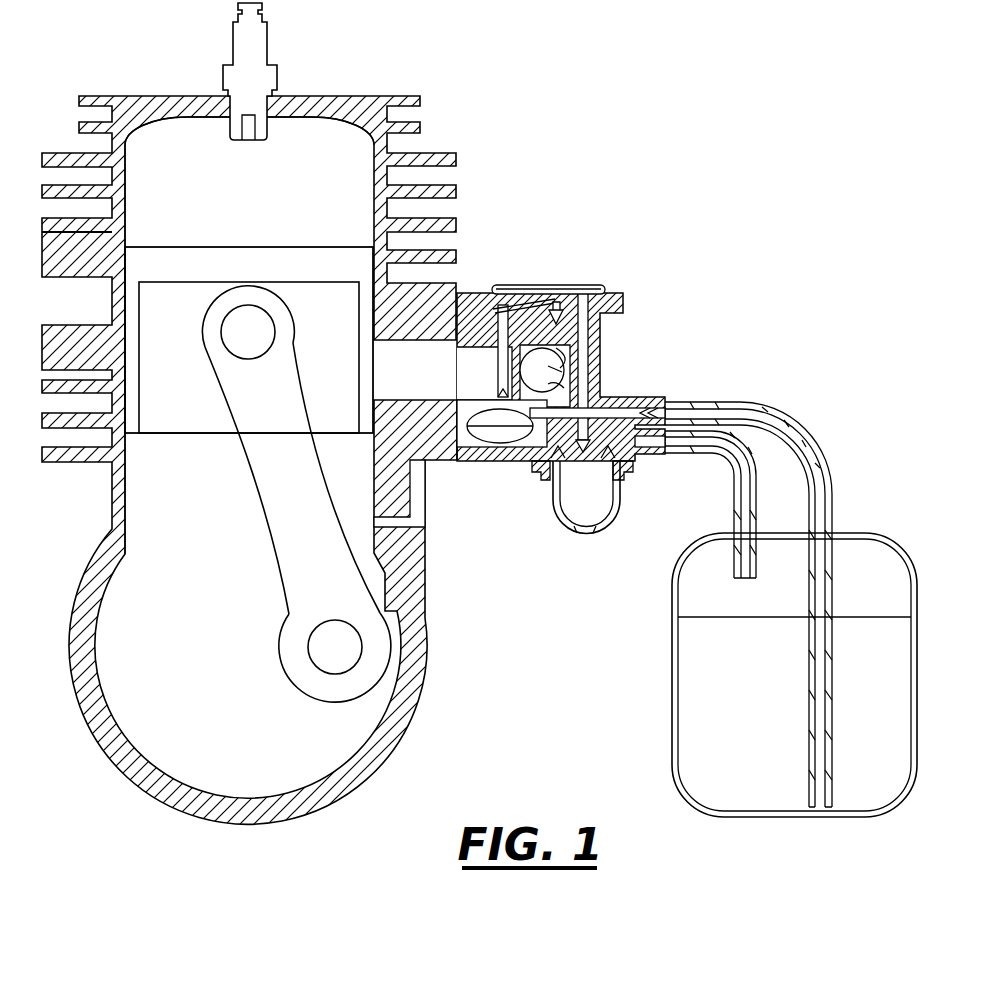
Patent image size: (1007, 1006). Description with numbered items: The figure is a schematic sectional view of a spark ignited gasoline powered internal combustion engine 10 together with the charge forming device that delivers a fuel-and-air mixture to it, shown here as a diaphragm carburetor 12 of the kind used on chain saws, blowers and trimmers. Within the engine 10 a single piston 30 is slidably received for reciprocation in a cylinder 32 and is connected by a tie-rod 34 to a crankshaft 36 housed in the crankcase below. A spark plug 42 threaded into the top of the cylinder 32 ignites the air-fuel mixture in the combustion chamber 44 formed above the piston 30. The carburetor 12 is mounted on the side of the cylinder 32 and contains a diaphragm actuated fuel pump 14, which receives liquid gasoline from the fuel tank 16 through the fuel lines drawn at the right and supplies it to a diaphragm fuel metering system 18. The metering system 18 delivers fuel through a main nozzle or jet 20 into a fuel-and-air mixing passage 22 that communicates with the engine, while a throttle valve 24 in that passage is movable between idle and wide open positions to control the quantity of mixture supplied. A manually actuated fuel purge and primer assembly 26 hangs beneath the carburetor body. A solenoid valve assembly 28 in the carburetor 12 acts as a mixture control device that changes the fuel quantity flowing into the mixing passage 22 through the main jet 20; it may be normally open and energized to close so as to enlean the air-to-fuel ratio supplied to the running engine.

The internal combustion engine 10 is at (147, 95).
The diaphragm carburetor 12 is at (472, 465).
The diaphragm actuated fuel pump 14 is at (500, 464).
The fuel tank 16 is at (902, 552).
The diaphragm fuel metering system 18 is at (564, 286).
The main nozzle or jet 20 is at (563, 356).
The fuel-and-air mixing passage 22 is at (556, 383).
The throttle valve 24 is at (553, 369).
The fuel purge and primer assembly 26 is at (582, 539).
The solenoid valve assembly 28 is at (556, 312).
The piston 30 is at (261, 247).
The cylinder 32 is at (125, 202).
The tie-rod 34 is at (277, 553).
The crankshaft 36 is at (308, 656).
The spark plug 42 is at (235, 27).
The combustion chamber 44 is at (313, 163).